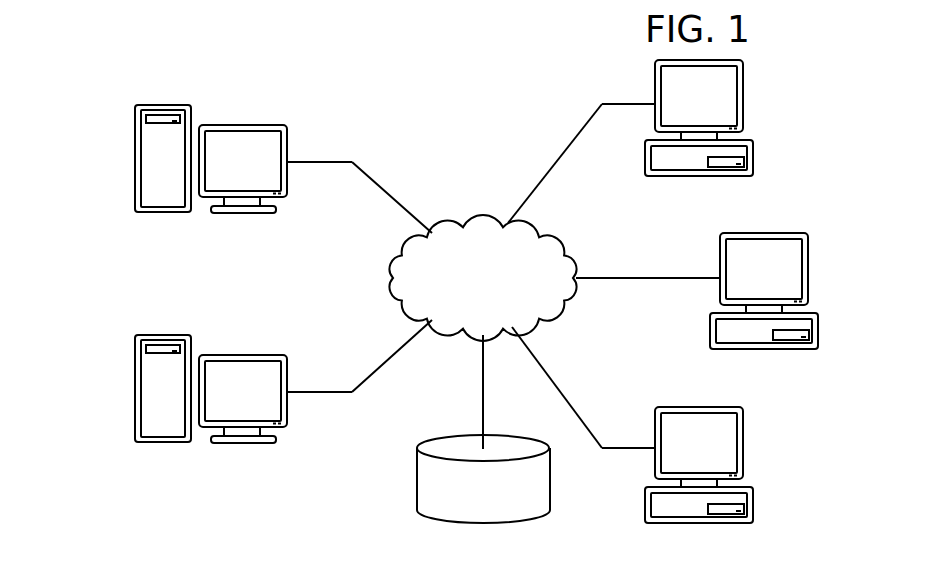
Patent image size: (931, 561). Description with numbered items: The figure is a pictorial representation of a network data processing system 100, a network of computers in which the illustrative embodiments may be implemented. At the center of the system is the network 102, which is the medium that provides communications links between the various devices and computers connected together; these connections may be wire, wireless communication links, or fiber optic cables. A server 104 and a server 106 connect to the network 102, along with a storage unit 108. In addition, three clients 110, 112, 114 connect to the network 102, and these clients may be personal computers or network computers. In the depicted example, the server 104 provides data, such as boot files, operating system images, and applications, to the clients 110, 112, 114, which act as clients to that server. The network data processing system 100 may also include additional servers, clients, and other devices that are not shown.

The network data processing system 100 is at (356, 68).
The network 102 is at (477, 221).
The server 104 is at (134, 157).
The server 106 is at (133, 388).
The storage unit 108 is at (417, 480).
The client 110 is at (753, 158).
The client 112 is at (818, 331).
The client 114 is at (753, 503).